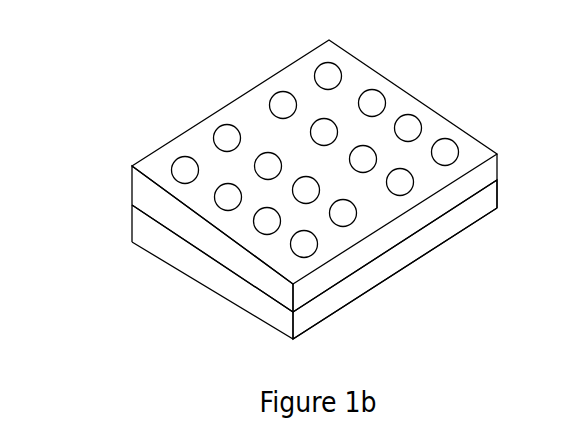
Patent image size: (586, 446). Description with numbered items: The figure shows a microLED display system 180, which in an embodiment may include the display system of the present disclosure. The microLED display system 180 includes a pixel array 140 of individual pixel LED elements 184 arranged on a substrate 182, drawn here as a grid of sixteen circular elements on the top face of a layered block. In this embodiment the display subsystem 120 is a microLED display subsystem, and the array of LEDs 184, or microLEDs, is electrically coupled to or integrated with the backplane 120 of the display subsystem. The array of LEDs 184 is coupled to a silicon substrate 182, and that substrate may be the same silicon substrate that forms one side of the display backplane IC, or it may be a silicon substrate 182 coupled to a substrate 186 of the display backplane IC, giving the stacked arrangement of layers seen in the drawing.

The display subsystem 120 is at (458, 208).
The pixel array 140 is at (314, 158).
The microLED display system 180 is at (353, 172).
The substrate 182 is at (499, 190).
The pixel LED elements 184 is at (225, 134).
The substrate of the display backplane IC 186 is at (183, 233).